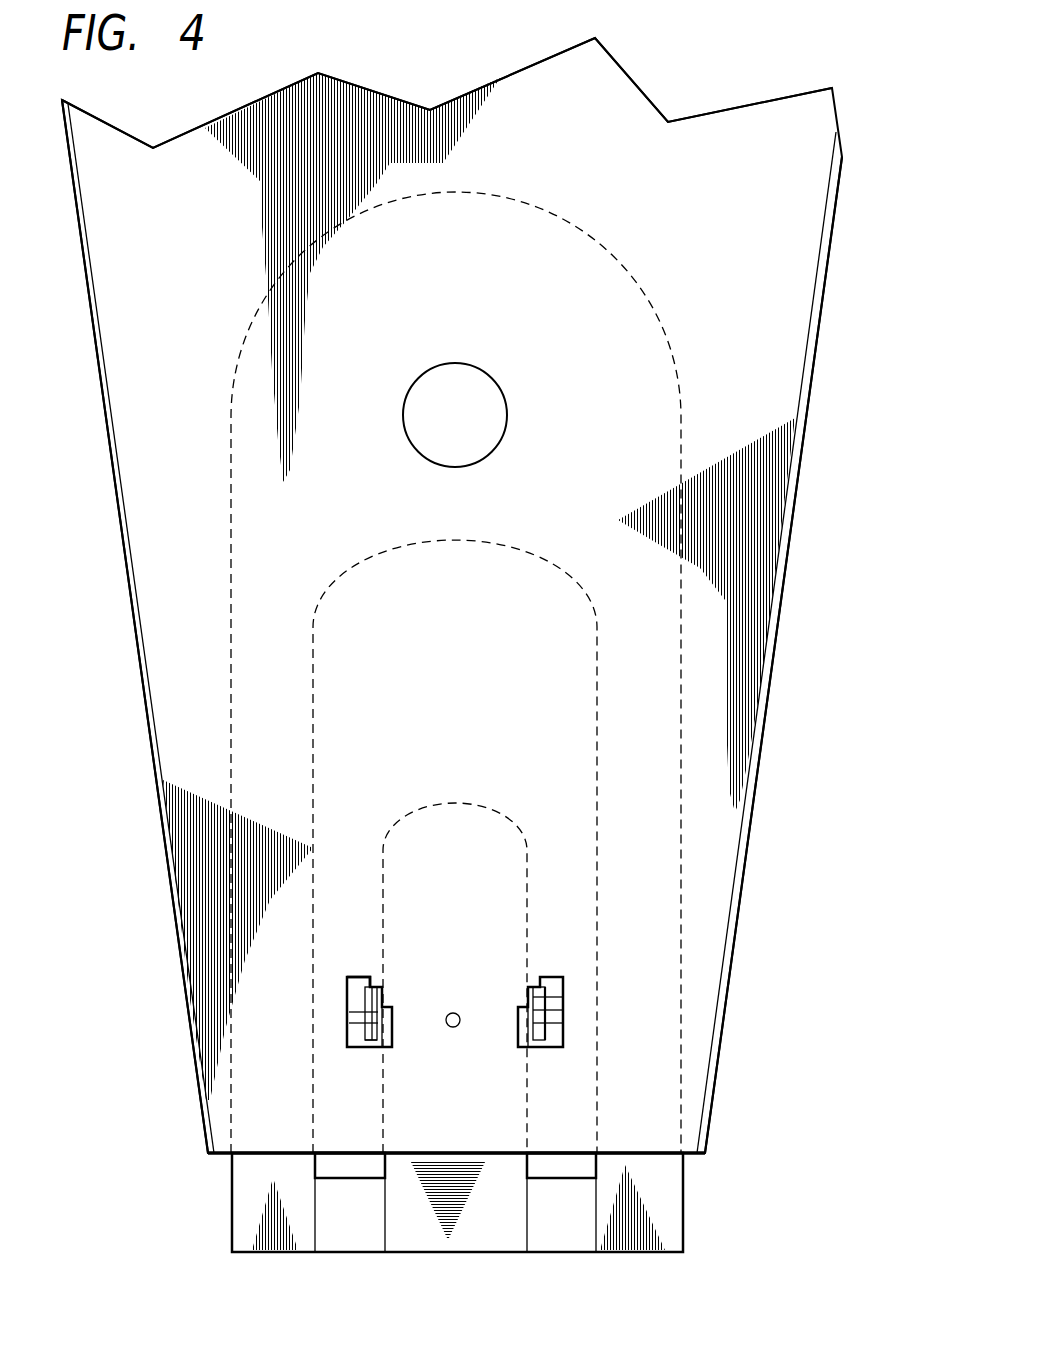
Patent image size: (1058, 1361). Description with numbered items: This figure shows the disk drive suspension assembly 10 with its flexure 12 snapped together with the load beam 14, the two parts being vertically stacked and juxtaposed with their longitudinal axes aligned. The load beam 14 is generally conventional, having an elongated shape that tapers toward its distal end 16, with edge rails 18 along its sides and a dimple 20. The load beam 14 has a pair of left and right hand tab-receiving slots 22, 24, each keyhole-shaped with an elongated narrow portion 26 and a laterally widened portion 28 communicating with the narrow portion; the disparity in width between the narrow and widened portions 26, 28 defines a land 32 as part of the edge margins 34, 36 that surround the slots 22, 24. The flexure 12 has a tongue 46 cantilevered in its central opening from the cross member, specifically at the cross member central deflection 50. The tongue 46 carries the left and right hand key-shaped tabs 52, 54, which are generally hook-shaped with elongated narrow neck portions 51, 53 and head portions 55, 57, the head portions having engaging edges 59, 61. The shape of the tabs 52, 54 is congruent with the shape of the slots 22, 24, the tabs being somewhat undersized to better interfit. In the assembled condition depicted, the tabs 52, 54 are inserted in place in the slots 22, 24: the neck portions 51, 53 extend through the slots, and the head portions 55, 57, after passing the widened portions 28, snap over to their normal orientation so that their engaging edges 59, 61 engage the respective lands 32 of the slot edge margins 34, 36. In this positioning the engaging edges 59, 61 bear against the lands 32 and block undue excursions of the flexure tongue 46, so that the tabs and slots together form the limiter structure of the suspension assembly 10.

The disk drive suspension assembly 10 is at (808, 736).
The flexure 12 is at (685, 1210).
The load beam 14 is at (752, 102).
The distal end 16 is at (692, 1140).
The edge rails 18 is at (101, 386).
The dimple 20 is at (456, 1012).
The left hand tab-receiving slot 22 is at (347, 1037).
The right hand tab-receiving slot 24 is at (567, 1017).
The elongated narrow portion 26 is at (352, 985).
The laterally widened portion 28 is at (390, 1032).
The land 32 is at (378, 985).
The edge margin 34 is at (396, 999).
The edge margin 36 is at (519, 997).
The tongue 46 is at (445, 827).
The central deflection 50 is at (458, 1233).
The neck portion 51 is at (376, 1047).
The left hand tab 52 is at (362, 1023).
The neck portion 53 is at (545, 1023).
The right hand tab 54 is at (548, 997).
The head portion 55 is at (360, 1012).
The head portion 57 is at (548, 1010).
The engaging edge 59 is at (384, 994).
The engaging edge 61 is at (523, 999).